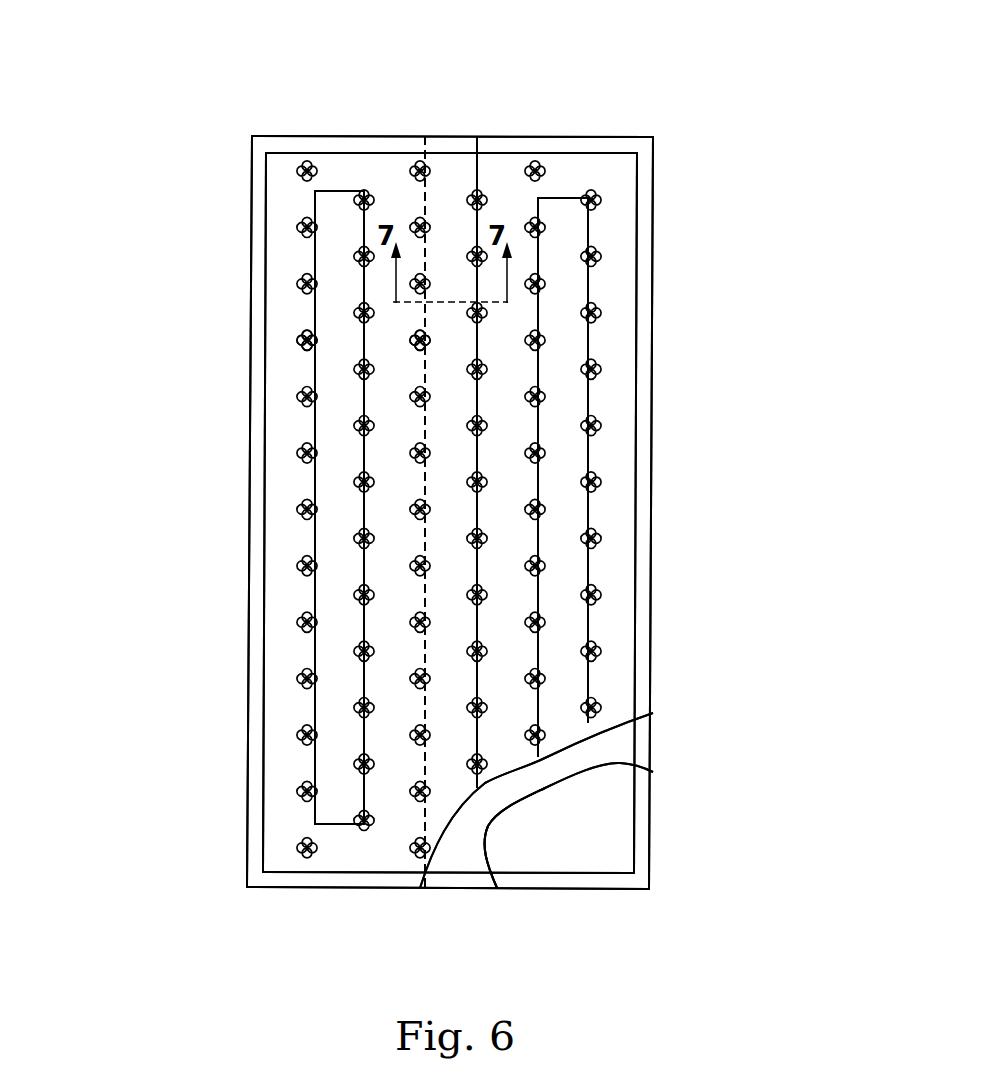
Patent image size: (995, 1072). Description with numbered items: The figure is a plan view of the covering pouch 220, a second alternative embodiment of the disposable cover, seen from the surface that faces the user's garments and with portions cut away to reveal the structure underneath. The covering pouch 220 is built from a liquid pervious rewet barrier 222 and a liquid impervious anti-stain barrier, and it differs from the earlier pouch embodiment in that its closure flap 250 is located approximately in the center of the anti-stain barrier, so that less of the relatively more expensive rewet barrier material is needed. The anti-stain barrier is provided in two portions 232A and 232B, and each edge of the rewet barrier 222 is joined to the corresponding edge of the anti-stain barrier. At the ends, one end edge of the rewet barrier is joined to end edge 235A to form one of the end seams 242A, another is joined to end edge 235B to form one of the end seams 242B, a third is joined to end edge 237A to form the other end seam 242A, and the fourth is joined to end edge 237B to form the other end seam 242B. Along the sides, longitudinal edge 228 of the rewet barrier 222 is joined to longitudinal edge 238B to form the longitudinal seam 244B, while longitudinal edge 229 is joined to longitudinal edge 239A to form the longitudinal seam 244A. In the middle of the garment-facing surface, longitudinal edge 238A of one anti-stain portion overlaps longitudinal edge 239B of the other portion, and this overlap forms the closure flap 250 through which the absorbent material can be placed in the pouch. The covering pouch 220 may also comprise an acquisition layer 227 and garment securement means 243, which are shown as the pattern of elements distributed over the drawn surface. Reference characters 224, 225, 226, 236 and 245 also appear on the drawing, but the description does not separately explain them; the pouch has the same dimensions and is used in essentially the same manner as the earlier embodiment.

The covering pouch 220 is at (678, 199).
The rewet barrier 222 is at (527, 850).
The inner pad portion 224 is at (666, 636).
The bottom edge 225 is at (448, 939).
The exposed adhesive region 226 is at (597, 842).
The acquisition layer 227 is at (419, 483).
The longitudinal edge 228 is at (754, 513).
The longitudinal edge 229 is at (157, 511).
The anti-stain barrier portion 232A is at (293, 766).
The anti-stain barrier portion 232B is at (600, 492).
The end edge 235A is at (448, 939).
The end edge 235B is at (395, 887).
The peel fold line 236 is at (577, 756).
The end edge 237A is at (419, 76).
The end edge 237B is at (368, 136).
The longitudinal edge 238A is at (538, 212).
The longitudinal edge 238B is at (653, 408).
The longitudinal edge 239A is at (247, 602).
The longitudinal edge 239B is at (425, 190).
The end seam 242A is at (335, 152).
The end seam 242B is at (545, 136).
The garment securement means 243 is at (562, 432).
The longitudinal seam 244A is at (265, 273).
The longitudinal seam 244B is at (635, 683).
The row of cells 245 is at (432, 342).
The closure flap 250 is at (433, 800).